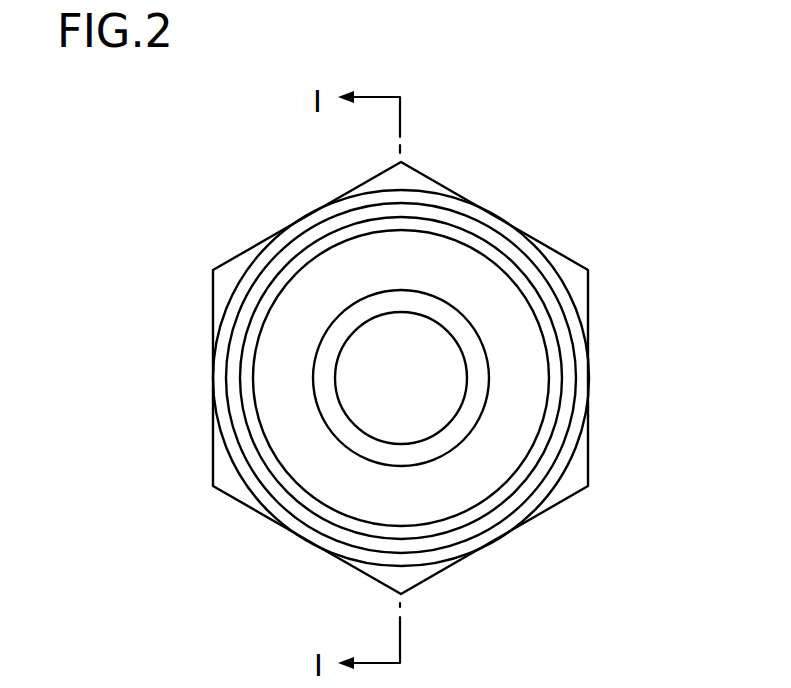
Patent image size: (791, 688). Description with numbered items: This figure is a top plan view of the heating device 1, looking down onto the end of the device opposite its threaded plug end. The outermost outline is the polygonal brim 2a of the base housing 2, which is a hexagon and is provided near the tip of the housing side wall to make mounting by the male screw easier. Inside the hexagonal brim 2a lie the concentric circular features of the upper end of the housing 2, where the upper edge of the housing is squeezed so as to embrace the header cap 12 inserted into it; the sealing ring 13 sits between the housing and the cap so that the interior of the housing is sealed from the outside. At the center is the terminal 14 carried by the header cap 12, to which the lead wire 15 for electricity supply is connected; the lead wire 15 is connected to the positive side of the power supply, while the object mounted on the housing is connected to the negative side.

The heating device 1 is at (250, 218).
The base housing 2 is at (519, 226).
The polygonal brim 2a is at (422, 185).
The header cap 12 is at (267, 372).
The sealing ring 13 is at (568, 393).
The terminal 14 is at (363, 420).
The lead wire 15 is at (362, 434).